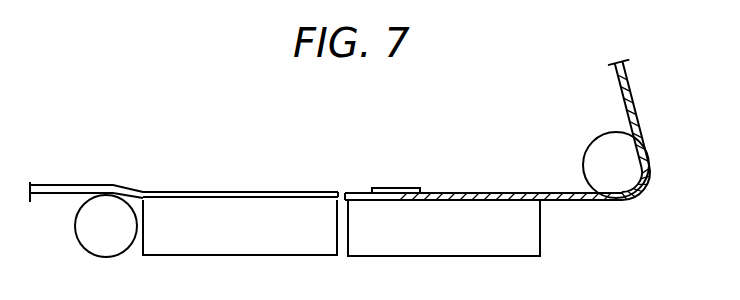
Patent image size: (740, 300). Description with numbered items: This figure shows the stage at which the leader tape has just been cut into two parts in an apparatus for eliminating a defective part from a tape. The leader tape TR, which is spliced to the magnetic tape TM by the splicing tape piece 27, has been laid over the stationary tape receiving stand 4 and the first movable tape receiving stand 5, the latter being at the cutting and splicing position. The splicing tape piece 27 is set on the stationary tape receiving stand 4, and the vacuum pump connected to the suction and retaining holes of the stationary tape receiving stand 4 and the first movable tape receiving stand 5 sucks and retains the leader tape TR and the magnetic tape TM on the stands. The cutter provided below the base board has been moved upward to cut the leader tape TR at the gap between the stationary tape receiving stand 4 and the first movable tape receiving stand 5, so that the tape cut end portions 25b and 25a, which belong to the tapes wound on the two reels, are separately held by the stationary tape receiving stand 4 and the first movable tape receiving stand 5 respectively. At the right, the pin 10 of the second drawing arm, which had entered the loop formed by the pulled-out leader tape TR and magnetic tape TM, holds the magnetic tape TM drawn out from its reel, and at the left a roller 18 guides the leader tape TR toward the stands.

The leader tape TR is at (68, 186).
The guide roller 18 is at (108, 250).
The tape cut end portion 25a is at (283, 192).
The tape cut end portion 25b is at (363, 192).
The splicing tape piece 27 is at (407, 187).
The first movable tape receiving stand 5 is at (315, 242).
The stationary tape receiving stand 4 is at (522, 242).
The pin 10 is at (630, 155).
The magnetic tape TM is at (613, 87).